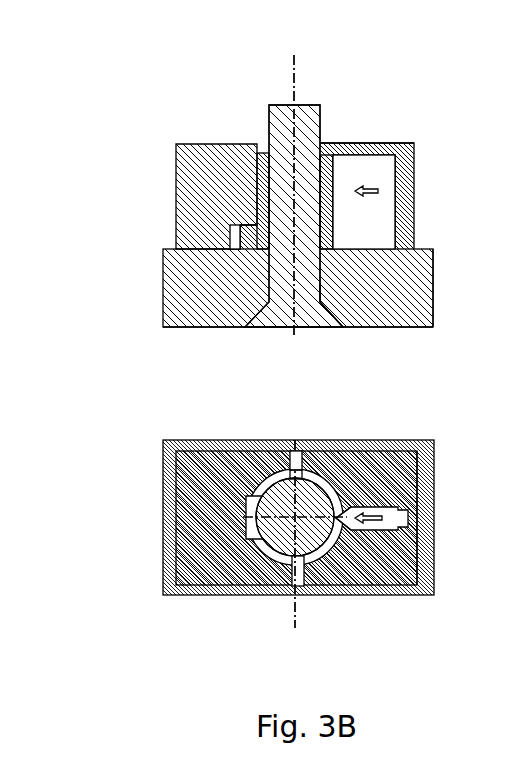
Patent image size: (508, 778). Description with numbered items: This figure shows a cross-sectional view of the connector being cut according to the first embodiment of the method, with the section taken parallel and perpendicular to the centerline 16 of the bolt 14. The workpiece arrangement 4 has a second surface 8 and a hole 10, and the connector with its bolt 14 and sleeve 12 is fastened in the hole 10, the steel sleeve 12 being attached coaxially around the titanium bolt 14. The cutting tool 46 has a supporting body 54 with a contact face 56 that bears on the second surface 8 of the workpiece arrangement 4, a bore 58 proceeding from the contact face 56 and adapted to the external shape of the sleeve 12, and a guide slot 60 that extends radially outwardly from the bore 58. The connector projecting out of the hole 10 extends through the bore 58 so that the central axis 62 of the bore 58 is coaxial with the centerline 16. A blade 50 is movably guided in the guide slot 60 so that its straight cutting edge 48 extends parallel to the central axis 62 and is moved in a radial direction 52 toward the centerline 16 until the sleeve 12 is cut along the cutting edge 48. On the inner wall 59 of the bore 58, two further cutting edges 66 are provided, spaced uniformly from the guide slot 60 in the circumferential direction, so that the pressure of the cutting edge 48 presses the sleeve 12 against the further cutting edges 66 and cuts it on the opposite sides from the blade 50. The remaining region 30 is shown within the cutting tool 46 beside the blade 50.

The workpiece arrangement 4 is at (192, 310).
The second surface 8 is at (322, 284).
The hole 10 is at (433, 319).
The sleeve 12 is at (250, 150).
The bolt 14 is at (286, 122).
The centerline 16 is at (298, 106).
The receiving space 30 is at (333, 233).
The cutting tool 46 is at (360, 143).
The cutting edge 48 is at (340, 144).
The blade 50 is at (386, 167).
The radial direction 52 is at (370, 184).
The supporting body 54 is at (223, 178).
The contact face 56 is at (408, 254).
The bore 58 is at (262, 151).
The inner wall 59 is at (225, 238).
The guide slot 60 is at (323, 157).
The central axis 62 is at (294, 341).
The further cutting edges 66 is at (265, 490).